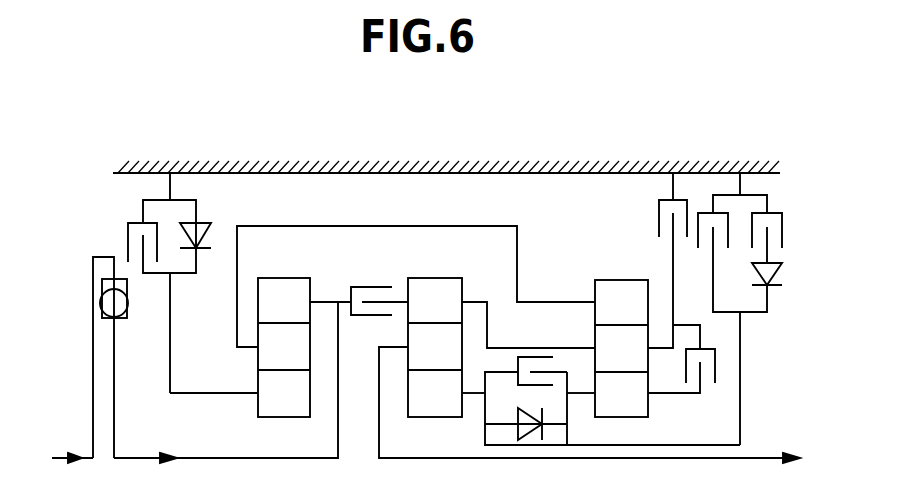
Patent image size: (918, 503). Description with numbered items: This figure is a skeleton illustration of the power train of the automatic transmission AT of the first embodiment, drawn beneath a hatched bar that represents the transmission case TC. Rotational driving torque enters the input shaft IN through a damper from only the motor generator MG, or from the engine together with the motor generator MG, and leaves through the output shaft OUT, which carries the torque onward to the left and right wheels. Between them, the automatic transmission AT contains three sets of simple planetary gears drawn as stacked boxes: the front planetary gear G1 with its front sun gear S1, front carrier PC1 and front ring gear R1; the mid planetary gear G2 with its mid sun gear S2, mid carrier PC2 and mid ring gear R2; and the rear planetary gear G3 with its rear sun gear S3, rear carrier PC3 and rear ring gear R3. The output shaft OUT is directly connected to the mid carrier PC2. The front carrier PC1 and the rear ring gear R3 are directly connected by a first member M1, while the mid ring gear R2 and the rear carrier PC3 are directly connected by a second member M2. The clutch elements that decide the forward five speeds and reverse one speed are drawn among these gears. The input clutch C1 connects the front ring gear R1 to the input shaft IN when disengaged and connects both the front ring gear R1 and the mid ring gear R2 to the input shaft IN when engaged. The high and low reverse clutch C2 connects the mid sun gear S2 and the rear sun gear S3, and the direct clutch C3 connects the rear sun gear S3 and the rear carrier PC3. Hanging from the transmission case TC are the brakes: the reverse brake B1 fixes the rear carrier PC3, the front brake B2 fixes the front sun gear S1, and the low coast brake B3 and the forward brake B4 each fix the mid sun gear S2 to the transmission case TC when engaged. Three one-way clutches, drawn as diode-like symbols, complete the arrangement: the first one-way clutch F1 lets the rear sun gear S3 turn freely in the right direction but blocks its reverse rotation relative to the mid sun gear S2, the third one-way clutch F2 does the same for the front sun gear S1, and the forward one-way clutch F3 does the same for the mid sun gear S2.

The automatic transmission AT is at (134, 143).
The transmission case TC is at (390, 172).
The motor generator MG is at (71, 363).
The input shaft IN is at (230, 458).
The output shaft OUT is at (745, 458).
The front planetary gear G1 is at (281, 323).
The mid planetary gear G2 is at (430, 324).
The rear planetary gear G3 is at (618, 324).
The front ring gear R1 is at (284, 302).
The front carrier PC1 is at (284, 348).
The front sun gear S1 is at (284, 394).
The mid ring gear R2 is at (435, 302).
The mid carrier PC2 is at (435, 348).
The mid sun gear S2 is at (435, 394).
The rear ring gear R3 is at (621, 303).
The rear carrier PC3 is at (621, 349).
The rear sun gear S3 is at (621, 395).
The first member M1 is at (362, 226).
The second member M2 is at (473, 302).
The input clutch C1 is at (359, 291).
The high and low reverse clutch C2 is at (601, 398).
The direct clutch C3 is at (681, 373).
The reverse brake B1 is at (658, 260).
The front brake B2 is at (185, 283).
The low coast brake B3 is at (724, 309).
The forward brake B4 is at (784, 238).
The first one-way clutch F1 is at (526, 422).
The third one-way clutch F2 is at (205, 224).
The forward one-way clutch F3 is at (783, 280).